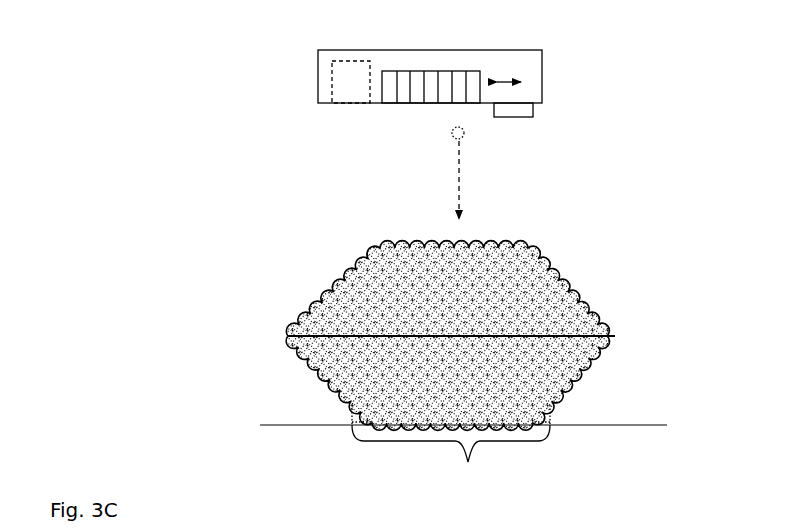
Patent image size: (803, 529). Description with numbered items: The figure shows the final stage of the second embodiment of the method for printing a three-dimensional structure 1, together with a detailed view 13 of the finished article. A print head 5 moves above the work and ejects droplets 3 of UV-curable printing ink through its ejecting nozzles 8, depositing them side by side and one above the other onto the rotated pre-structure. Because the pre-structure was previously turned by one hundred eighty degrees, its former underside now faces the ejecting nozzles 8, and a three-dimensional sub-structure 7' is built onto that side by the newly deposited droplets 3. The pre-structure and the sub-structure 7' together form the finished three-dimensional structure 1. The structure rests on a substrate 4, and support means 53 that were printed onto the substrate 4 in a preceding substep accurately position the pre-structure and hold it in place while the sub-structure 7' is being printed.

The three-dimensional structure 1 is at (433, 243).
The detailed view 13 is at (614, 251).
The droplets 3 is at (462, 133).
The substrate 4 is at (612, 336).
The print head 5 is at (527, 71).
The sub-structure 7' is at (239, 331).
The ejecting nozzles 8 is at (443, 85).
The support means 53 is at (451, 445).